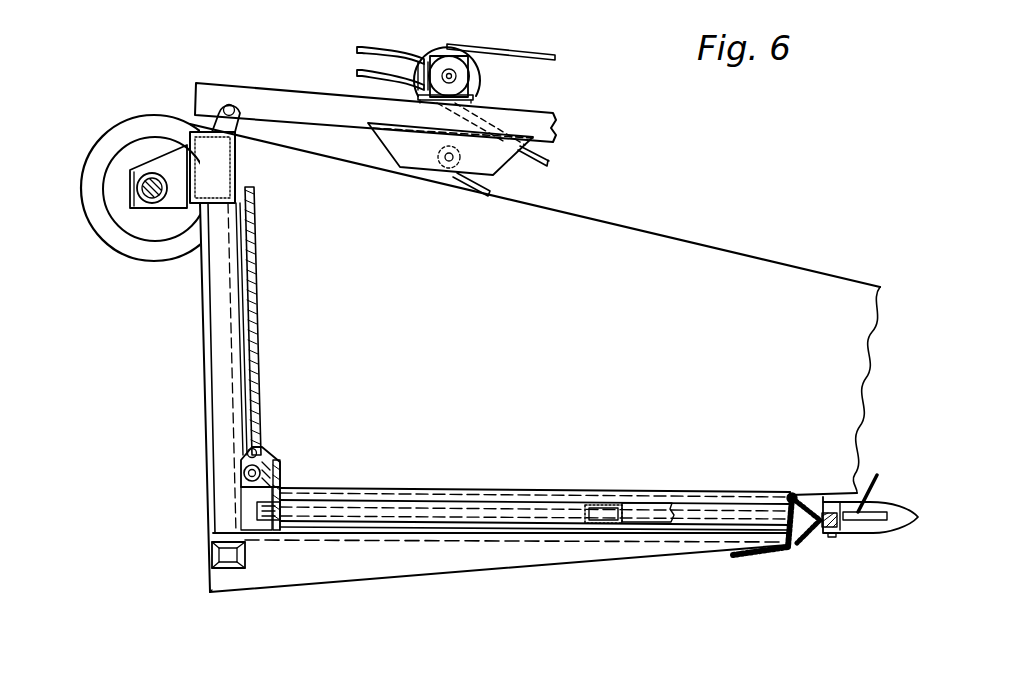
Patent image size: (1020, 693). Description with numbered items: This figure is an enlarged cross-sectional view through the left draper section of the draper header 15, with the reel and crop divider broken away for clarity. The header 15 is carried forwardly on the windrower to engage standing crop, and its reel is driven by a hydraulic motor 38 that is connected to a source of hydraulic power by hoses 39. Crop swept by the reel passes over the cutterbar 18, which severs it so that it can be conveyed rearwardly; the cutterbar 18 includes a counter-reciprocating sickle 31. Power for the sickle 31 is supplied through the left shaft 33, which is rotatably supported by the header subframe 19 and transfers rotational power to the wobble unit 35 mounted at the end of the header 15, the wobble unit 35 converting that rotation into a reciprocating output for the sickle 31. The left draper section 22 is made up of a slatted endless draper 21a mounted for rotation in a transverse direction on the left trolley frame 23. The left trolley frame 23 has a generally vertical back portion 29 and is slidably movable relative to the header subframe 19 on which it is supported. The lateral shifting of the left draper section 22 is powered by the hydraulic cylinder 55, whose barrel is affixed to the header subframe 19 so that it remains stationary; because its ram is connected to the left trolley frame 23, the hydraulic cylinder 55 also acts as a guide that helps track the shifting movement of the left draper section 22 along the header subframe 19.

The header 15 is at (627, 227).
The cutterbar 18 is at (878, 537).
The header subframe 19 is at (210, 374).
The slatted endless draper 21a is at (395, 487).
The left draper section 22 is at (725, 485).
The left trolley frame 23 is at (628, 512).
The vertical back portion 29 is at (257, 302).
The sickle 31 is at (873, 497).
The left shaft 33 is at (152, 176).
The wobble unit 35 is at (142, 261).
The hydraulic motor 38 is at (480, 78).
The hoses 39 is at (382, 56).
The hydraulic cylinder 55 is at (267, 452).